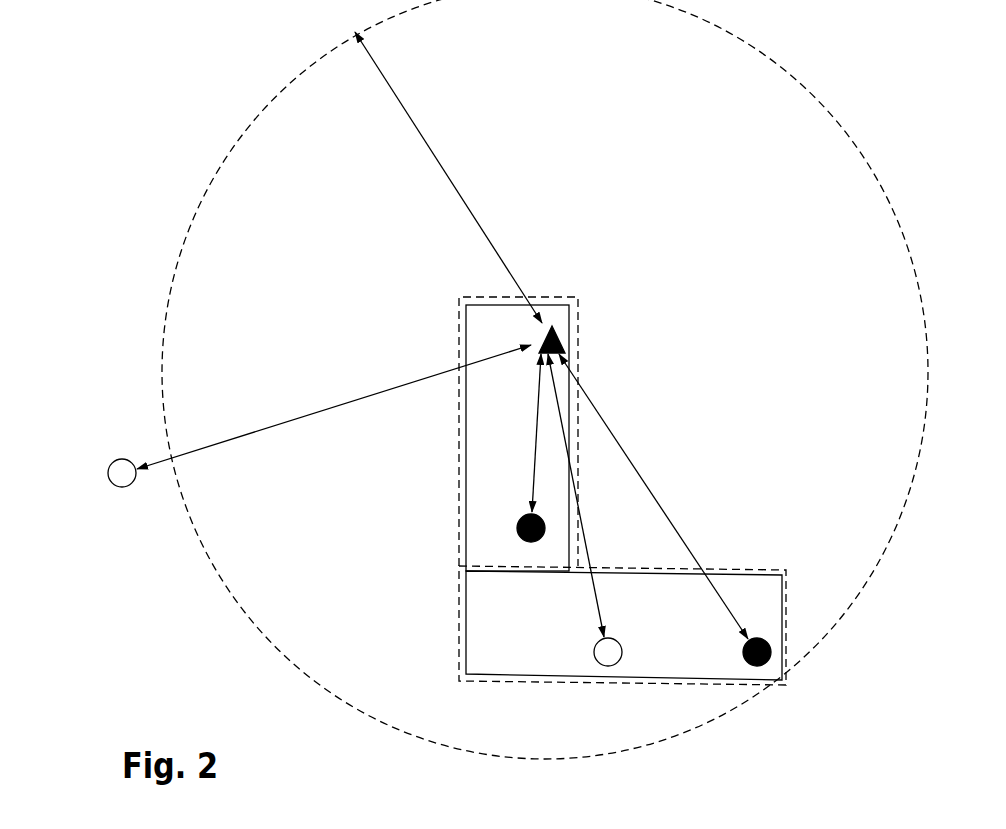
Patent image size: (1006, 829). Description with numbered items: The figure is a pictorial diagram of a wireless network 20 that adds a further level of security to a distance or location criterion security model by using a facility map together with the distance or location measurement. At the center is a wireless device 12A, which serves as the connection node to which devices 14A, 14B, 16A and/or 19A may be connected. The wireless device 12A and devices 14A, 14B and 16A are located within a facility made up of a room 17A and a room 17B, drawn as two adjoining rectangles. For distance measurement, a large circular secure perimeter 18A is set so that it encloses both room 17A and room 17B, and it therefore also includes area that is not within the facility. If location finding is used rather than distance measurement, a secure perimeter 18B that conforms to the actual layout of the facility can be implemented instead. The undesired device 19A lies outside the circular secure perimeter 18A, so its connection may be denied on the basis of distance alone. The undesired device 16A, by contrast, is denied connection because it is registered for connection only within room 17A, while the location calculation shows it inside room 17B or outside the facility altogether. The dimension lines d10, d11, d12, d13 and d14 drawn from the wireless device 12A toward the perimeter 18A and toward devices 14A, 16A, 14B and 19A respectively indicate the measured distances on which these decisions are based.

The wireless network 20 is at (163, 117).
The circular secure perimeter 18A is at (924, 327).
The secure perimeter 18B is at (758, 570).
The room 17A is at (517, 336).
The room 17B is at (512, 601).
The wireless device 12A is at (561, 342).
The device 14A is at (518, 546).
The device 14B is at (764, 637).
The undesired device 16A is at (595, 658).
The undesired device 19A is at (107, 476).
The distance to coverage boundary d10 is at (458, 194).
The distance to candidate location d11 is at (583, 562).
The distance to first mobile station d12 is at (536, 418).
The distance to second mobile station d13 is at (609, 436).
The distance to remote station d14 is at (320, 412).